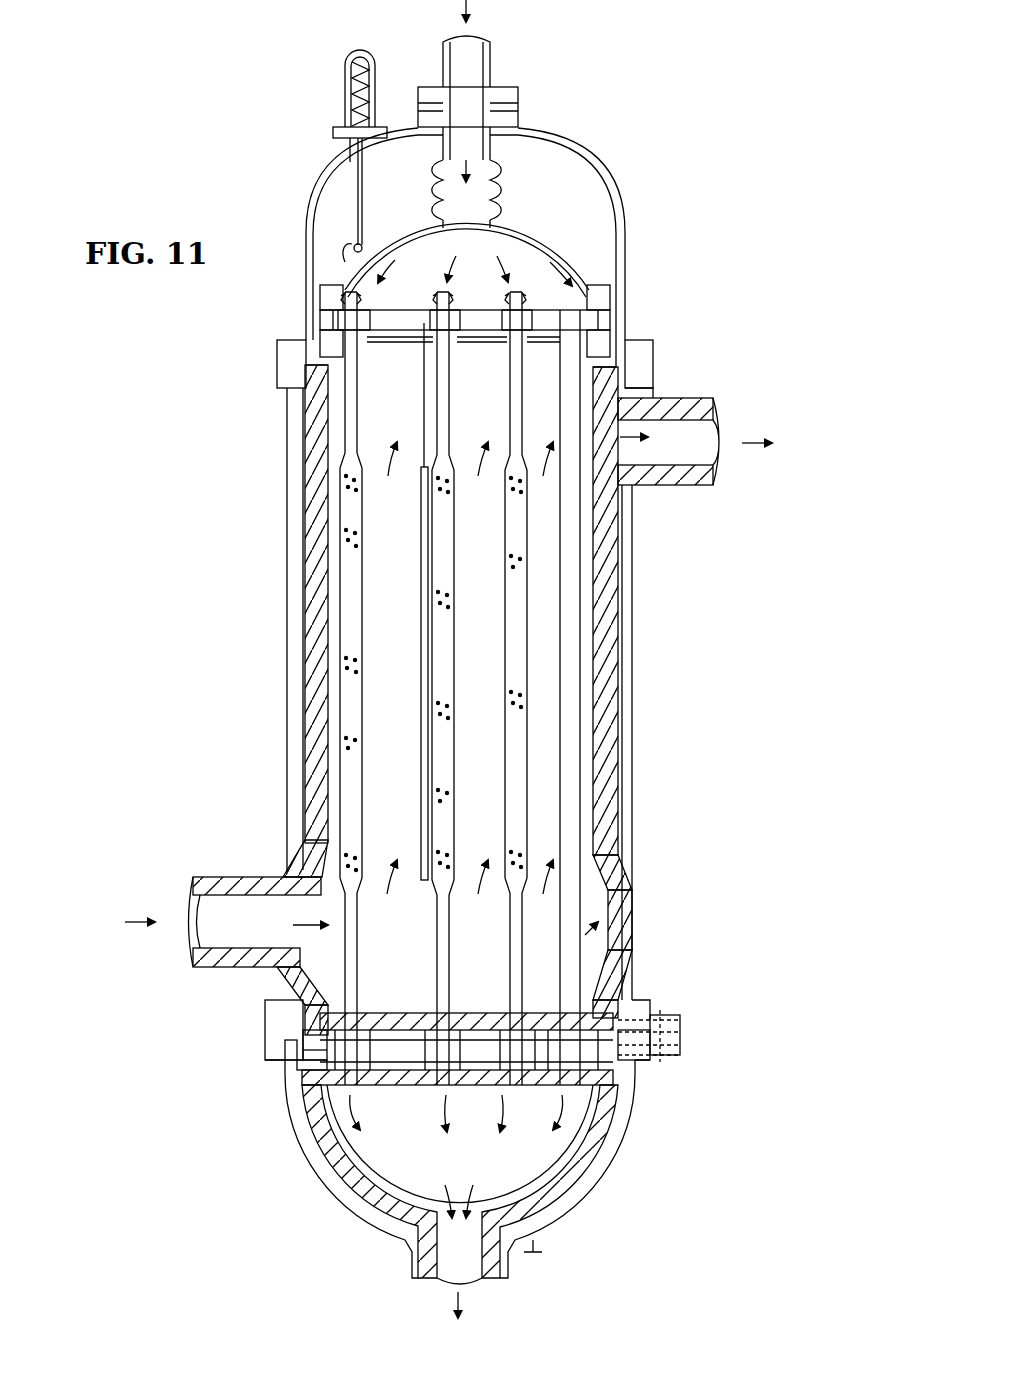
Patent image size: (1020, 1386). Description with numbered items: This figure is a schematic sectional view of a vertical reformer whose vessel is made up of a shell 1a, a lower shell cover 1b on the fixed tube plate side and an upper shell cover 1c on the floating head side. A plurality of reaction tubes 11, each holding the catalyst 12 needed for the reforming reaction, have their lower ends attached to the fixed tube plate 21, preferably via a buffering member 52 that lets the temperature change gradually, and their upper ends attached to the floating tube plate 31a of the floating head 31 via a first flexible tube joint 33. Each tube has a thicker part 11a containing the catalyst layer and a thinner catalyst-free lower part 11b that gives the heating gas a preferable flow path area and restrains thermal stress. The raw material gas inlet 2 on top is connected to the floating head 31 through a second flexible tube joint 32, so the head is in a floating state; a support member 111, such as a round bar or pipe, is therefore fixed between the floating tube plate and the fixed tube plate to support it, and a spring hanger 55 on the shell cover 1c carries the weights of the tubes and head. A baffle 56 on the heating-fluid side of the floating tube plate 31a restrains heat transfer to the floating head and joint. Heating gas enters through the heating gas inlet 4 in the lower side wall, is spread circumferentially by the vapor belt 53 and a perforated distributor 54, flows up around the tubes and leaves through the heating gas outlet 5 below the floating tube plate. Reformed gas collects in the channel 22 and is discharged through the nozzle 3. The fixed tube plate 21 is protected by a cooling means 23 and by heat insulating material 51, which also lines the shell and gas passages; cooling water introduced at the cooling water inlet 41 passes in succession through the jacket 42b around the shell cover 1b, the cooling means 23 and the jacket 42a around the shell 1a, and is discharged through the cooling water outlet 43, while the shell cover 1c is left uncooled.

The raw material gas inlet 2 is at (494, 60).
The shell cover on the floating head side 1c is at (594, 170).
The spring hanger 55 is at (343, 97).
The second flexible tube joint 32 is at (432, 179).
The floating head 31 is at (518, 230).
The floating tube plate 31a is at (475, 310).
The first flexible tube joint 33 is at (437, 297).
The baffle 56 is at (476, 344).
The cooling water outlet 43 is at (267, 424).
The shell 1a is at (628, 660).
The water-cooling jacket 42a is at (295, 504).
The vapor belt 53 is at (292, 866).
The distributor 54 is at (286, 984).
The heating gas outlet 5 is at (690, 398).
The heating gas inlet 4 is at (202, 877).
The reaction tubes 11 is at (350, 600).
The part containing the catalyst layer 11a is at (362, 644).
The lower part of the reaction tube 11b is at (357, 925).
The catalyst 12 is at (528, 610).
The support member 111 is at (584, 640).
The buffering member 52 is at (356, 1018).
The heat insulating material 51 is at (317, 680).
The fixed tube plate 21 is at (265, 1042).
The cooling means 23 is at (600, 1050).
The shell cover on the fixed tube plate side 1b is at (598, 1186).
The water-cooling jacket 42b is at (326, 1184).
The channel 22 is at (566, 1128).
The reformed gas outlet nozzle 3 is at (406, 1266).
The cooling water inlet 41 is at (540, 1256).